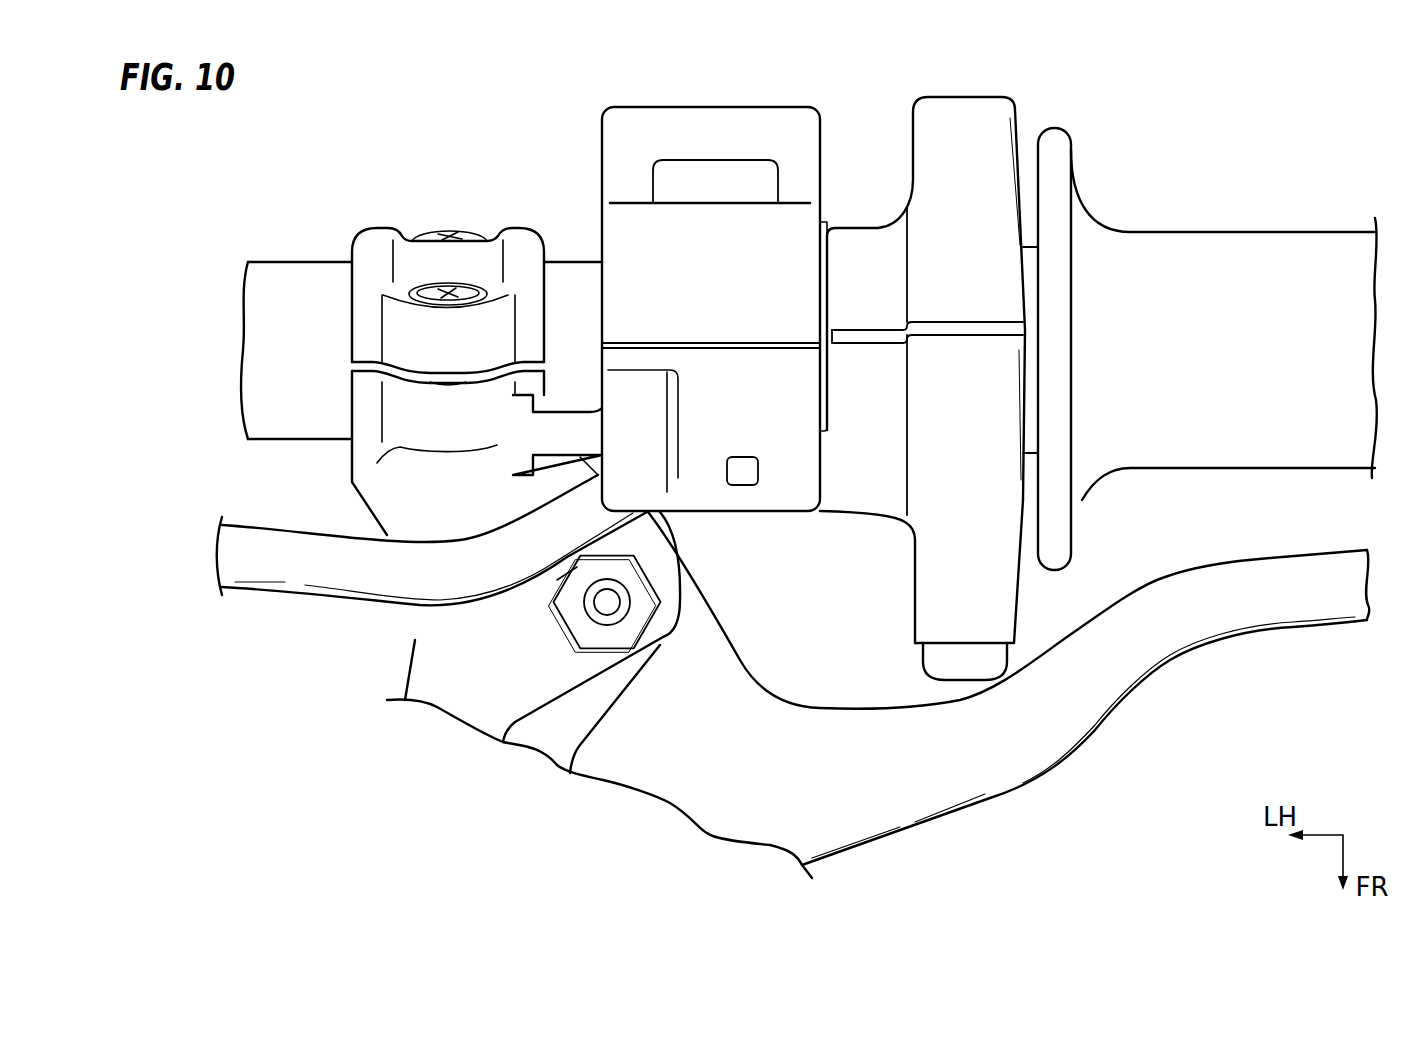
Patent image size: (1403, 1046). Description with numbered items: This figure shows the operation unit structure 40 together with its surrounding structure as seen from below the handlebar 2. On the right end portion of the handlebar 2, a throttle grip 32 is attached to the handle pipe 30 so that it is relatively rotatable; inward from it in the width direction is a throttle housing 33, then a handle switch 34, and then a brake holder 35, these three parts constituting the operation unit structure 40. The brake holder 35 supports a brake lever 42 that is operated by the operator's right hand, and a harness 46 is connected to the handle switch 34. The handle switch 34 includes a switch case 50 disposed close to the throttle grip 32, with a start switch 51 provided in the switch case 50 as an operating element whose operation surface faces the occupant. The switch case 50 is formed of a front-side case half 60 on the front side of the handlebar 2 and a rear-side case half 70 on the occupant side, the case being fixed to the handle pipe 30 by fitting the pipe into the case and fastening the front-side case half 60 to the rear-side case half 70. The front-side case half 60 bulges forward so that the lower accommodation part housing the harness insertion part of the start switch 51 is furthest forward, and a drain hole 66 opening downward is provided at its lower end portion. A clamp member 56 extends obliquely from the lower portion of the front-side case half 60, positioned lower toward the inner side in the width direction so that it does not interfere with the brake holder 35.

The handlebar 2 is at (1134, 218).
The handle pipe 30 is at (300, 268).
The throttle grip 32 is at (1270, 242).
The throttle housing 33 is at (912, 613).
The handle switch 34 is at (799, 524).
The brake holder 35 is at (357, 402).
The operation unit structure 40 is at (777, 580).
The brake lever 42 is at (1122, 716).
The harness 46 is at (290, 585).
The switch case 50 is at (817, 521).
The start switch 51 is at (750, 160).
The clamp member 56 is at (532, 442).
The front-side case half 60 is at (765, 512).
The drain hole 66 is at (743, 487).
The rear-side case half 70 is at (688, 107).